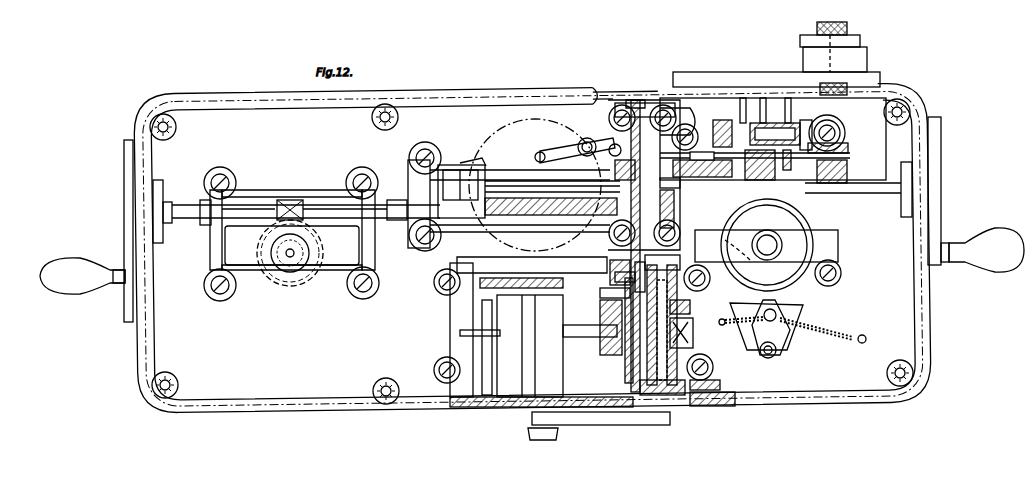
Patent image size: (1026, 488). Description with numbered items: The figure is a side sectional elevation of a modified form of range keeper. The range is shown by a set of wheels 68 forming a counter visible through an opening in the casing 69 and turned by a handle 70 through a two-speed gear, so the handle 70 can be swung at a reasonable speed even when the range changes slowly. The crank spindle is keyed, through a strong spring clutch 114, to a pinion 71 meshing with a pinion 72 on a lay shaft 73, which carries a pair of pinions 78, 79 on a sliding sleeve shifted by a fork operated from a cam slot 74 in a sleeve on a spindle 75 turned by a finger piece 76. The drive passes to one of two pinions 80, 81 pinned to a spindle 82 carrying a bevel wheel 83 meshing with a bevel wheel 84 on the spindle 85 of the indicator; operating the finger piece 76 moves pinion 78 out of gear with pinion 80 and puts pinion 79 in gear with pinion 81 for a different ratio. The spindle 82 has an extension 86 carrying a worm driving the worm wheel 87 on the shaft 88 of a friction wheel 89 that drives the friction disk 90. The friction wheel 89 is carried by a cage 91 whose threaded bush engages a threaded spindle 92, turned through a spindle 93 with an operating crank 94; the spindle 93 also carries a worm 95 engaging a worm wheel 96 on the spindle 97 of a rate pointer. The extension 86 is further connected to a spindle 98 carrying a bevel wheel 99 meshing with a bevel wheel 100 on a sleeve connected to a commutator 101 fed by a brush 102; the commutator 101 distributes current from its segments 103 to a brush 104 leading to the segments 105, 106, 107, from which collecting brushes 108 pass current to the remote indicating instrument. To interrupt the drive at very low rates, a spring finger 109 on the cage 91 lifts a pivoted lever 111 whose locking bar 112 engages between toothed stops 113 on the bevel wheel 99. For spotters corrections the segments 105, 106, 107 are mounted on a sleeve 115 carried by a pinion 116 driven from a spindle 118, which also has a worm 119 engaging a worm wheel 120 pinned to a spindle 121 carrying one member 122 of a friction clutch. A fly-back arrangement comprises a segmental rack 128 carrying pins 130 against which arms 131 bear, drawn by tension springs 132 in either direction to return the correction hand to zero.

The set of wheels 68 is at (563, 368).
The casing 69 is at (490, 407).
The handle 70 is at (588, 419).
The pinion 71 is at (625, 360).
The pinion 72 is at (712, 356).
The lay shaft 73 is at (693, 330).
The cam slot 74 is at (688, 340).
The spindle 75 is at (724, 385).
The finger piece 76 is at (705, 406).
The pinion 78 is at (690, 312).
The pinion 79 is at (714, 306).
The pinion 80 is at (600, 305).
The pinion 81 is at (615, 278).
The spindle 82 is at (528, 281).
The bevel wheel 83 is at (630, 275).
The bevel wheel 84 is at (600, 292).
The spindle 85 is at (580, 337).
The extension 86 is at (674, 205).
The worm wheel 87 is at (675, 185).
The shaft 88 is at (567, 200).
The friction wheel 89 is at (485, 178).
The friction disk 90 is at (500, 150).
The cage 91 is at (551, 203).
The threaded spindle 92 is at (535, 218).
The spindle 93 is at (292, 230).
The operating crank 94 is at (82, 276).
The worm 95 is at (290, 200).
The worm wheel 96 is at (324, 258).
The spindle 97 is at (288, 253).
The spindle 98 is at (628, 170).
The bevel wheel 99 is at (677, 119).
The bevel wheel 100 is at (692, 135).
The commutator 101 is at (716, 168).
The brush 102 is at (776, 83).
The segments 103 is at (729, 118).
The brush 104 is at (775, 134).
The segment 105 is at (754, 106).
The segment 106 is at (775, 106).
The segment 107 is at (801, 106).
The collecting brushes 108 is at (800, 112).
The spring finger 109 is at (483, 155).
The pivoted lever 111 is at (575, 146).
The locking bar 112 is at (634, 100).
The toothed stops 113 is at (606, 139).
The spring clutch 114 is at (848, 172).
The sleeve 115 is at (845, 123).
The pinion 116 is at (848, 138).
The spindle 118 is at (866, 193).
The worm 119 is at (767, 245).
The worm wheel 120 is at (790, 290).
The spindle 121 is at (738, 249).
The friction clutch member 122 is at (783, 248).
The segmental rack 128 is at (805, 318).
The pins 130 is at (740, 312).
The arms 131 is at (790, 335).
The tension springs 132 is at (862, 334).